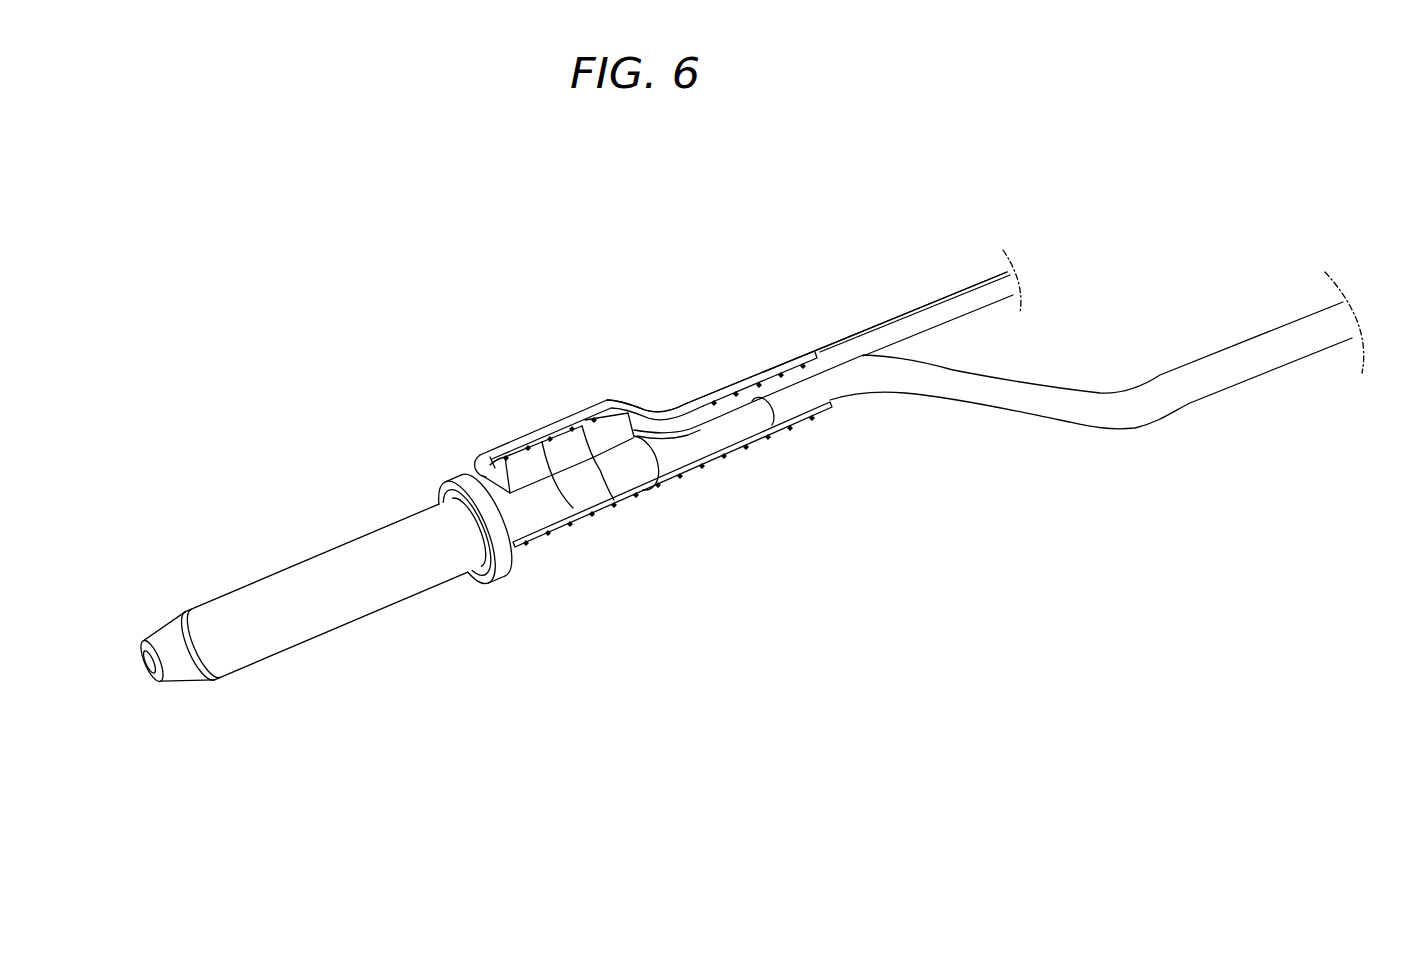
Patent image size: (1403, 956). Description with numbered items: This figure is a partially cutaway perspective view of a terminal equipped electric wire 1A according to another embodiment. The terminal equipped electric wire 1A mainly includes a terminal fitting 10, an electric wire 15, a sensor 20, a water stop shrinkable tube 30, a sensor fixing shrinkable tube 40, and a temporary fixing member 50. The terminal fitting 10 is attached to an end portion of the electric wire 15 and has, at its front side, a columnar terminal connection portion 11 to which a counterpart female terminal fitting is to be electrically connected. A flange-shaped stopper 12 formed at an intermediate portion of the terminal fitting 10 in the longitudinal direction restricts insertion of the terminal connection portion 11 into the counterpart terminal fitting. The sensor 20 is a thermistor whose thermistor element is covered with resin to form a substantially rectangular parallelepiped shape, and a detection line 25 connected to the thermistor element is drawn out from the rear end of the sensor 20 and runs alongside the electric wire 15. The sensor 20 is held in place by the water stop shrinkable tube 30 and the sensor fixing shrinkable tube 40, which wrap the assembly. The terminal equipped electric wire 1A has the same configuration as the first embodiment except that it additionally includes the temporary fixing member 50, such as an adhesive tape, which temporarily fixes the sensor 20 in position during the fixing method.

The terminal equipped electric wire 1A is at (591, 345).
The terminal fitting 10 is at (336, 579).
The terminal connection portion 11 is at (357, 603).
The stopper 12 is at (495, 560).
The sensor 20 is at (527, 470).
The water stop shrinkable tube 30 is at (638, 465).
The sensor fixing shrinkable tube 40 is at (652, 398).
The temporary fixing member 50 is at (587, 490).
The detection line 25 is at (919, 311).
The electric wire 15 is at (1009, 416).